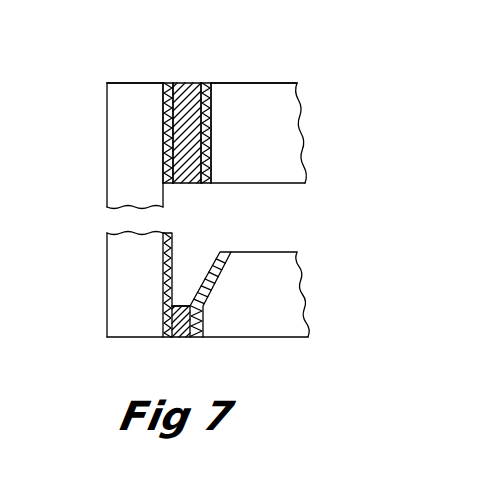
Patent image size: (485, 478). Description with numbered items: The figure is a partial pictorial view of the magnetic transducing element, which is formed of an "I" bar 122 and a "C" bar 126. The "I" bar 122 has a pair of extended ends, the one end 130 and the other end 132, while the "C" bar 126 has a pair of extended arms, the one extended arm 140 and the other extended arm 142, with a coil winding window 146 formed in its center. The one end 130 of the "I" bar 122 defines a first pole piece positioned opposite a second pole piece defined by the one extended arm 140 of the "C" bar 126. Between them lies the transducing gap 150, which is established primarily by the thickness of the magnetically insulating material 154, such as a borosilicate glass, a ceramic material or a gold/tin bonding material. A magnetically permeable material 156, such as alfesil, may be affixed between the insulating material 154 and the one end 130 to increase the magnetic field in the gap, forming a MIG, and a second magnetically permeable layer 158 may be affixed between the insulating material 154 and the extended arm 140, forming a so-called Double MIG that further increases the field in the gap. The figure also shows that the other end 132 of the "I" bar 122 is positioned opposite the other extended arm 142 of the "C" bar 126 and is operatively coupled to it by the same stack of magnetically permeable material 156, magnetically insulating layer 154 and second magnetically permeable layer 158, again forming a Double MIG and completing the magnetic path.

The "I" bar 122 is at (107, 168).
The "C" bar 126 is at (309, 136).
The one end of the "I" bar 130 is at (104, 276).
The other end of the "I" bar 132 is at (123, 102).
The one extended arm of the "C" bar 140 is at (278, 279).
The other extended arm of the "C" bar 142 is at (265, 93).
The coil winding window 146 is at (270, 216).
The transducing gap 150 is at (109, 369).
The magnetically insulating material 154 is at (187, 83).
The magnetically permeable material 156 is at (165, 83).
The second magnetically permeable layer 158 is at (207, 83).